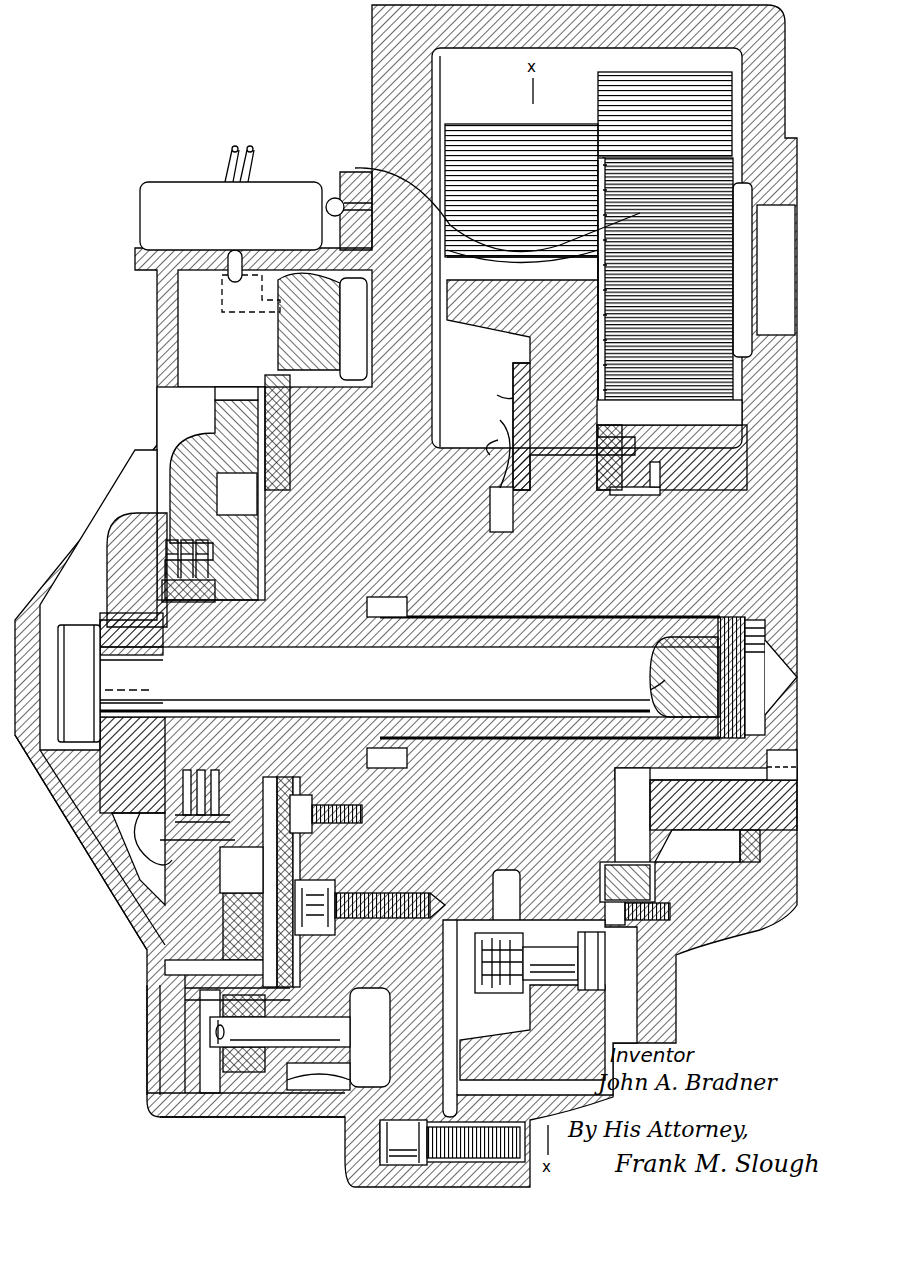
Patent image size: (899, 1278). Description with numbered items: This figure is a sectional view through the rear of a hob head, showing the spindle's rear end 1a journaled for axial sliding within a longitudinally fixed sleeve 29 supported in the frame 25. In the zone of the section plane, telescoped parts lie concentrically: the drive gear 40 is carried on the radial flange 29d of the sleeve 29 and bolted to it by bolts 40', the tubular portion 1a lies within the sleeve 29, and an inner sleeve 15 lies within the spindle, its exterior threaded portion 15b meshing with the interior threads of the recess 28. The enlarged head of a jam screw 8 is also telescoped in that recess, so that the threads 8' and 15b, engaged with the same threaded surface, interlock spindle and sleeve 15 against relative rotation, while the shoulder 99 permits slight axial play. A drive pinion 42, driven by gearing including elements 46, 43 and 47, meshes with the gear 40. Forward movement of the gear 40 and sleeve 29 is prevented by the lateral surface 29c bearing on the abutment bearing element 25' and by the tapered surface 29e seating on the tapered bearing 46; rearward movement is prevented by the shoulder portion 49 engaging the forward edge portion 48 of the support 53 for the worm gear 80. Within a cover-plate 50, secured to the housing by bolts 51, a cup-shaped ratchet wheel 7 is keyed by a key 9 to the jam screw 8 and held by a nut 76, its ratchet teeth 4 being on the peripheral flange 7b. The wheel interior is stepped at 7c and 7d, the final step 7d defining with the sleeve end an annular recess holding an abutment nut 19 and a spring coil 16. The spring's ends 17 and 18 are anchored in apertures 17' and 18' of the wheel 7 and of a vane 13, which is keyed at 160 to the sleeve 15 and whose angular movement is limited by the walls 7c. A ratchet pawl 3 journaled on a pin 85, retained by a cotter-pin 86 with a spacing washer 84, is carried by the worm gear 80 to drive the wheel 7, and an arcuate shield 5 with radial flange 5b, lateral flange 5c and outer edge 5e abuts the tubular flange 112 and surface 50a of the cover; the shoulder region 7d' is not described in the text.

The rear end of the hob spindle 1a is at (665, 608).
The ratchet pawl 3 is at (205, 1010).
The ratchet teeth 4 is at (237, 392).
The arcuate shield element 5 is at (190, 1070).
The radial flange 5b is at (222, 1003).
The lateral flange 5c is at (200, 990).
The outer arcuate edge 5e is at (180, 1113).
The ratchet wheel 7 is at (130, 770).
The peripheral flange 7b is at (222, 432).
The interior step 7c is at (217, 482).
The final step 7d is at (138, 556).
The block shoulder 7d' is at (130, 858).
The jam screw 8 is at (410, 682).
The threads of the jam screw 8' is at (635, 685).
The key 9 is at (150, 690).
The vane 13 is at (260, 882).
The inner sleeve 15 is at (202, 718).
The exterior threaded portion 15b is at (490, 625).
The spring coil 16 is at (168, 560).
The spring end 17 is at (81, 842).
The aperture 17' is at (102, 847).
The spring end 18 is at (190, 823).
The aperture 18' is at (193, 867).
The abutment nut 19 is at (176, 592).
The frame 25 is at (672, 672).
The abutment bearing element 25' is at (633, 686).
The internally threaded tubular recess 28 is at (735, 722).
The sleeve 29 is at (672, 512).
The lateral surface 29c is at (492, 442).
The radial flange 29d is at (495, 393).
The tapered surface 29e is at (750, 515).
The drive gear 40 is at (541, 370).
The bolts 40' is at (540, 1011).
The drive pinion 42 is at (486, 124).
The pinion 43 is at (489, 199).
The tapered bearing 46 is at (630, 84).
The gearing element 47 is at (761, 258).
The forward edge portion 48 is at (512, 497).
The rearwardly facing shoulder portion 49 is at (520, 430).
The cover-plate 50 is at (95, 515).
The inner planular arcuate surface 50a is at (190, 1055).
The bolts 51 is at (333, 198).
The support 53 is at (270, 400).
The nut 76 is at (97, 720).
The worm gear 80 is at (338, 300).
The spacing washer 84 is at (280, 1050).
The pin 85 is at (262, 1050).
The cotter-pin 86 is at (215, 1050).
The shoulder 99 is at (165, 648).
The tubular flange 112 is at (198, 1100).
The key 160 is at (270, 712).